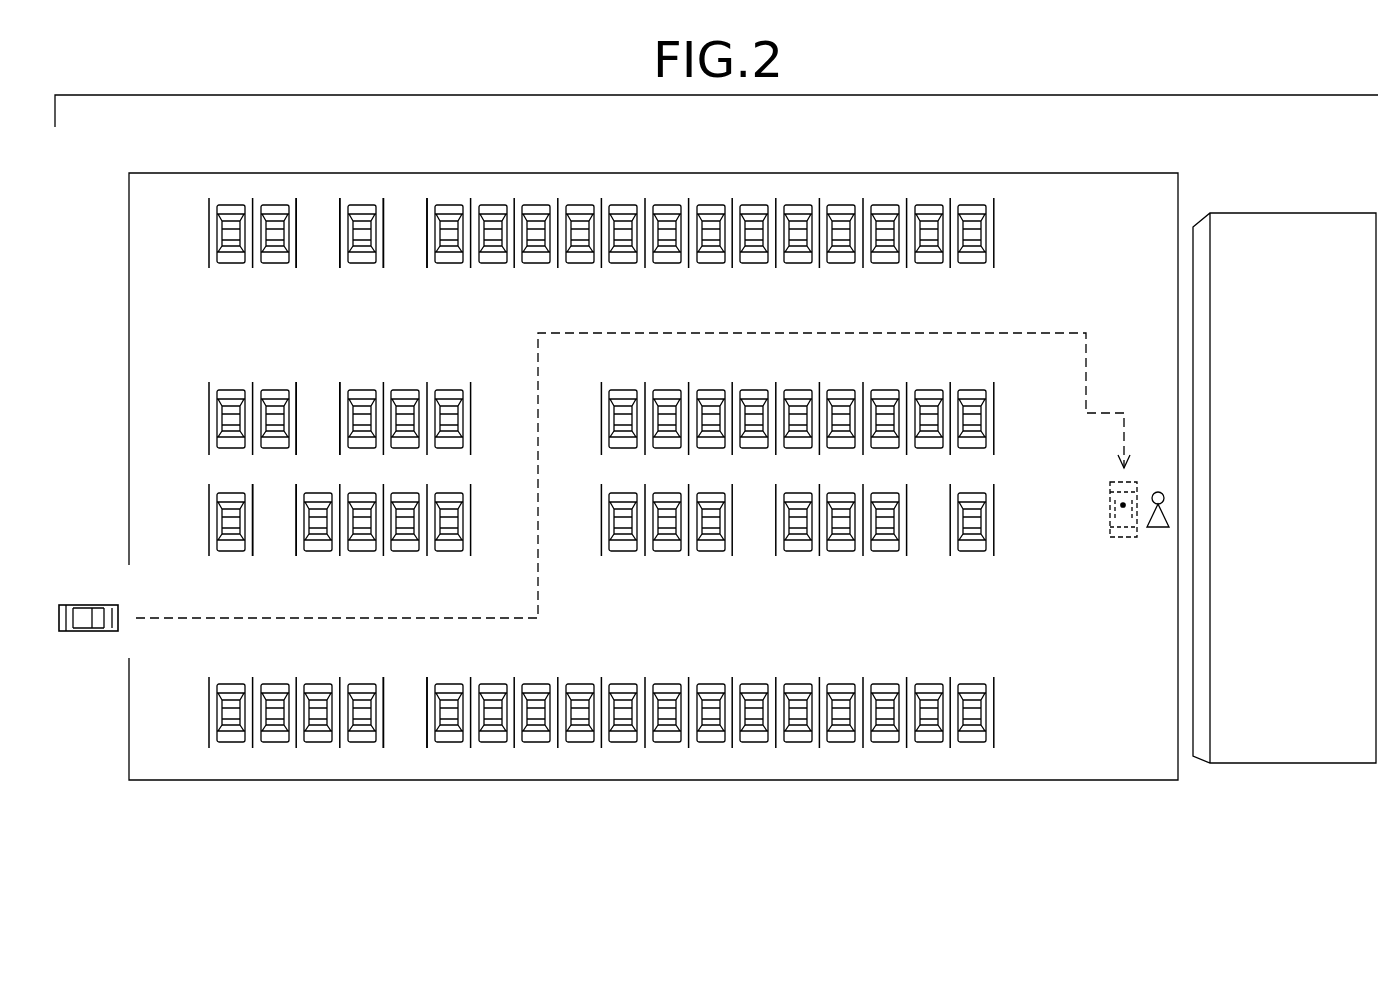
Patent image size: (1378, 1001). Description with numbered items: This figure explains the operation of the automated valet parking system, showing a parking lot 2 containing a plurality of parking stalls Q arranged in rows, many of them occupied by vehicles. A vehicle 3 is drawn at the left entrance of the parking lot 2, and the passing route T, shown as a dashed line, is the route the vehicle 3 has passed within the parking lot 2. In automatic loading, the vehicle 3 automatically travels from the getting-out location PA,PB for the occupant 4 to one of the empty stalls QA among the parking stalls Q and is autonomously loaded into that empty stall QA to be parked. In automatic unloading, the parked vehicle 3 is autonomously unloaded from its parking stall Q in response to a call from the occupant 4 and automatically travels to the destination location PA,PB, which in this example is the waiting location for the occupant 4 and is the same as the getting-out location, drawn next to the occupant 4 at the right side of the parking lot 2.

The parking lot 2 is at (728, 171).
The vehicle 3 is at (90, 605).
The occupant 4 is at (1158, 490).
The parking stall Q is at (970, 200).
The empty stall QA is at (318, 210).
The passing route T is at (538, 493).
The getting-out location and destination location PA,PB is at (1110, 505).